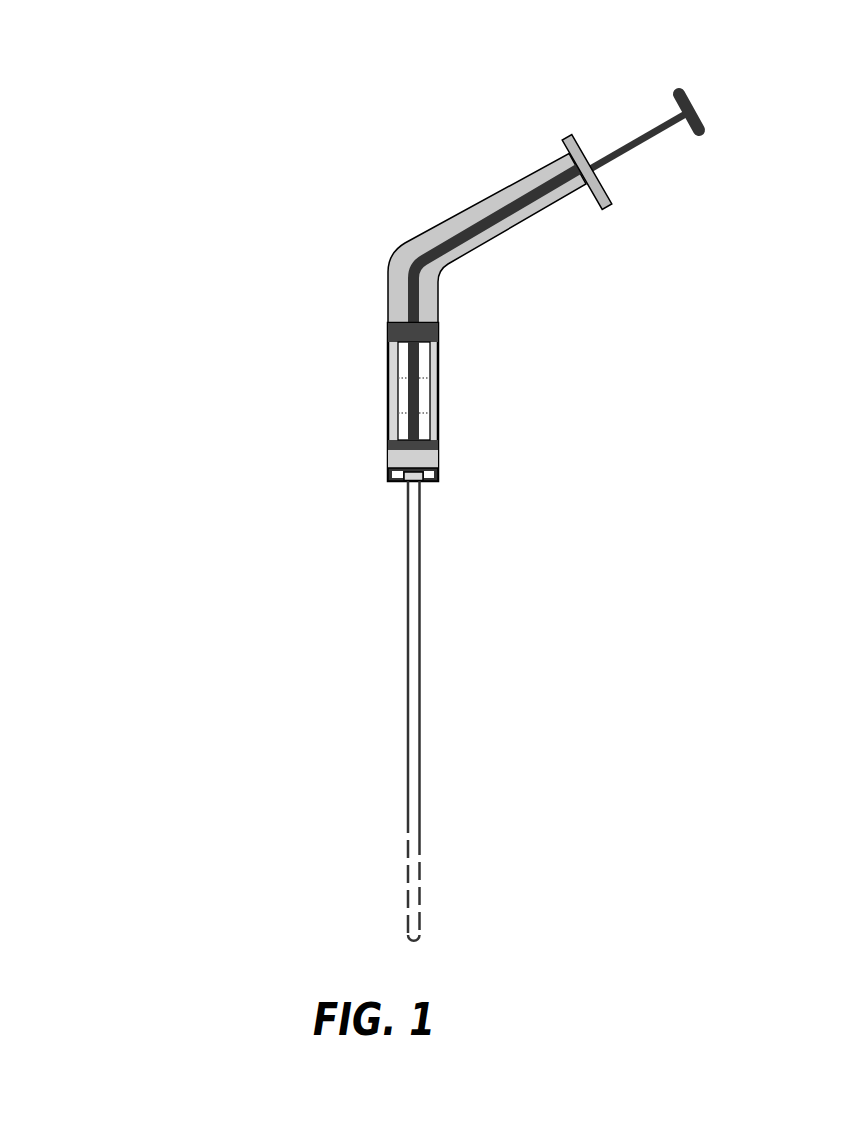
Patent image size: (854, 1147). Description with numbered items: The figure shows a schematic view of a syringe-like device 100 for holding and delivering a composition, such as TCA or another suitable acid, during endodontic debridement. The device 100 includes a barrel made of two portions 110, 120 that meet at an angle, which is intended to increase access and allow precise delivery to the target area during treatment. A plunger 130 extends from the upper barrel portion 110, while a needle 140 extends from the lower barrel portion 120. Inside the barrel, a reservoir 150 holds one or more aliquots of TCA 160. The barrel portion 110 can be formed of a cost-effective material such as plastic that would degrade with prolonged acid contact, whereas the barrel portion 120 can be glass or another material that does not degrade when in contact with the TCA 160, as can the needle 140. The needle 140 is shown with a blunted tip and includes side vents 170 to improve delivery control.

The device 100 is at (193, 122).
The barrel portion 110 is at (470, 200).
The barrel portion 120 is at (320, 357).
The plunger 130 is at (625, 135).
The needle 140 is at (321, 711).
The reservoir 150 is at (400, 360).
The TCA 160 is at (393, 458).
The side vents 170 is at (407, 852).